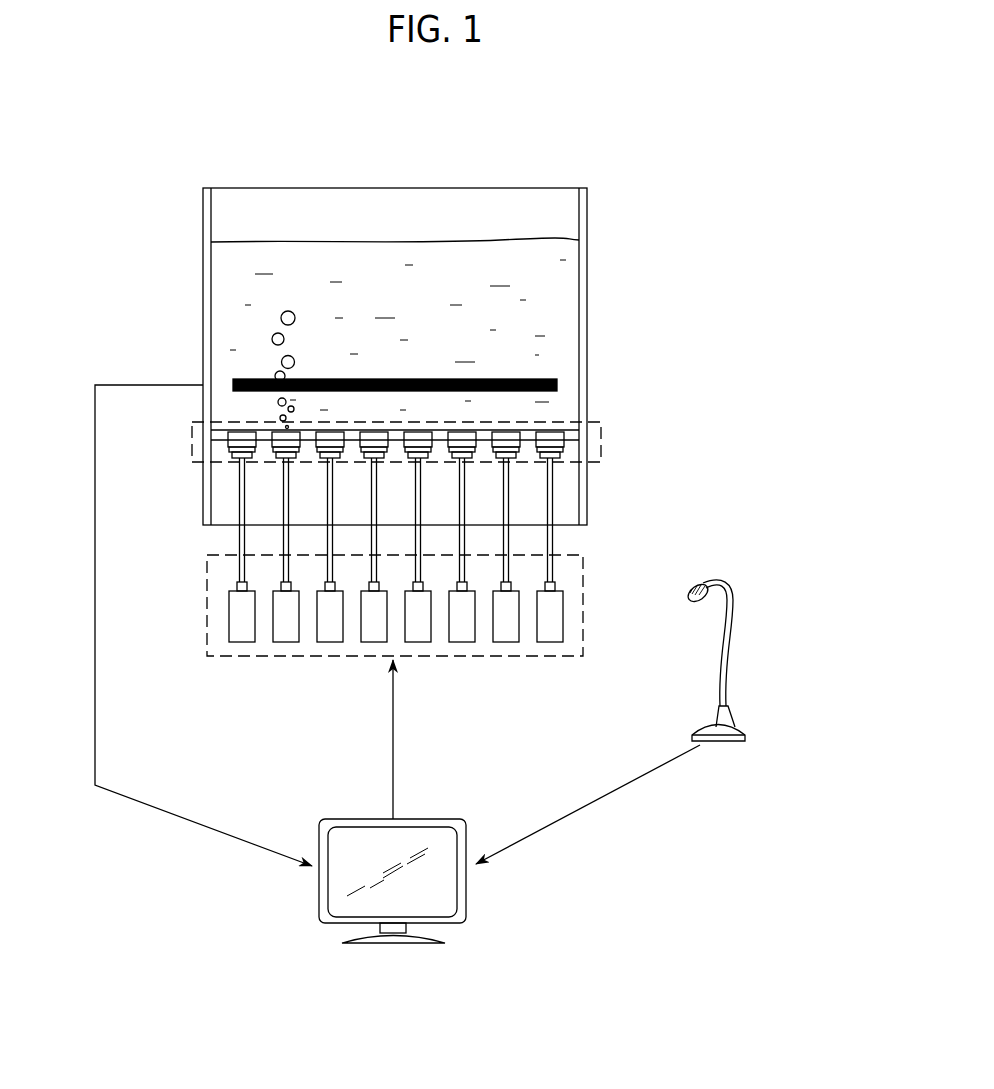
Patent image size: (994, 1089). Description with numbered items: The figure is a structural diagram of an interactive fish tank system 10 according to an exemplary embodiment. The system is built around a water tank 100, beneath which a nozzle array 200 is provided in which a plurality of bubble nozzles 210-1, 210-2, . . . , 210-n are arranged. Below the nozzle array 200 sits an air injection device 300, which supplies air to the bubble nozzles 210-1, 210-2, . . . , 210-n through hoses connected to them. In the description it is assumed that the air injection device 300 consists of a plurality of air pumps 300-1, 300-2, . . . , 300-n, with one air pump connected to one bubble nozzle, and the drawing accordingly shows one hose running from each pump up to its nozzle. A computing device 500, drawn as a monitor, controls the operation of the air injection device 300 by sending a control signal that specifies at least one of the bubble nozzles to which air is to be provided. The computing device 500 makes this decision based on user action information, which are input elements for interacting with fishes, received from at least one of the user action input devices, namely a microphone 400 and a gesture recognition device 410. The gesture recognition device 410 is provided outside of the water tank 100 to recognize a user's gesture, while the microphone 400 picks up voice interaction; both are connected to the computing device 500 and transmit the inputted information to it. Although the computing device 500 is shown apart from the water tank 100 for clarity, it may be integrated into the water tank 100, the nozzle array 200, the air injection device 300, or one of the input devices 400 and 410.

The interactive fish tank system 10 is at (520, 152).
The water tank 100 is at (587, 213).
The gesture recognition device 410 is at (557, 386).
The nozzle array 200 is at (388, 506).
The bubble nozzle 210-1 is at (232, 460).
The bubble nozzle 210-2 is at (276, 460).
The bubble nozzle 210-n is at (564, 464).
The air injection device 300 is at (425, 645).
The air pump 300-1 is at (236, 660).
The air pump 300-2 is at (288, 660).
The air pump 300-n is at (546, 660).
The microphone 400 is at (725, 655).
The computing device 500 is at (466, 905).